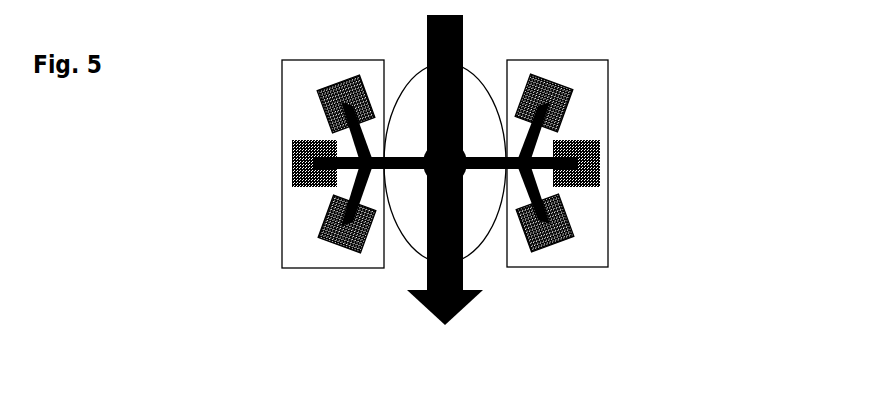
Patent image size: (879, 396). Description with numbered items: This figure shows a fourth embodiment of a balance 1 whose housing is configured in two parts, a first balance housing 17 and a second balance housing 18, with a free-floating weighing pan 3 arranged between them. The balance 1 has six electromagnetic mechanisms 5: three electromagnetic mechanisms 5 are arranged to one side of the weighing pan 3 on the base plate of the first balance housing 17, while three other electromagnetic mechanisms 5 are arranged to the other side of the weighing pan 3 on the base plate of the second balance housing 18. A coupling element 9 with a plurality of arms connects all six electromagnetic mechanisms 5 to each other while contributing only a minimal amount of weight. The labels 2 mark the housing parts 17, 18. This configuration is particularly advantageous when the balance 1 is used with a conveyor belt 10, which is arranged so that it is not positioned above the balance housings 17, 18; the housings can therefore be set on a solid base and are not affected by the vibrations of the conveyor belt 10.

The balance 1 is at (241, 305).
The sensor 2 is at (480, 115).
The weighing pan 3 is at (427, 117).
The electromagnetic mechanism 5 is at (300, 163).
The coupling element 9 is at (543, 168).
The conveyor belt 10 is at (482, 292).
The first balance housing 17 is at (302, 101).
The second balance housing 18 is at (588, 80).